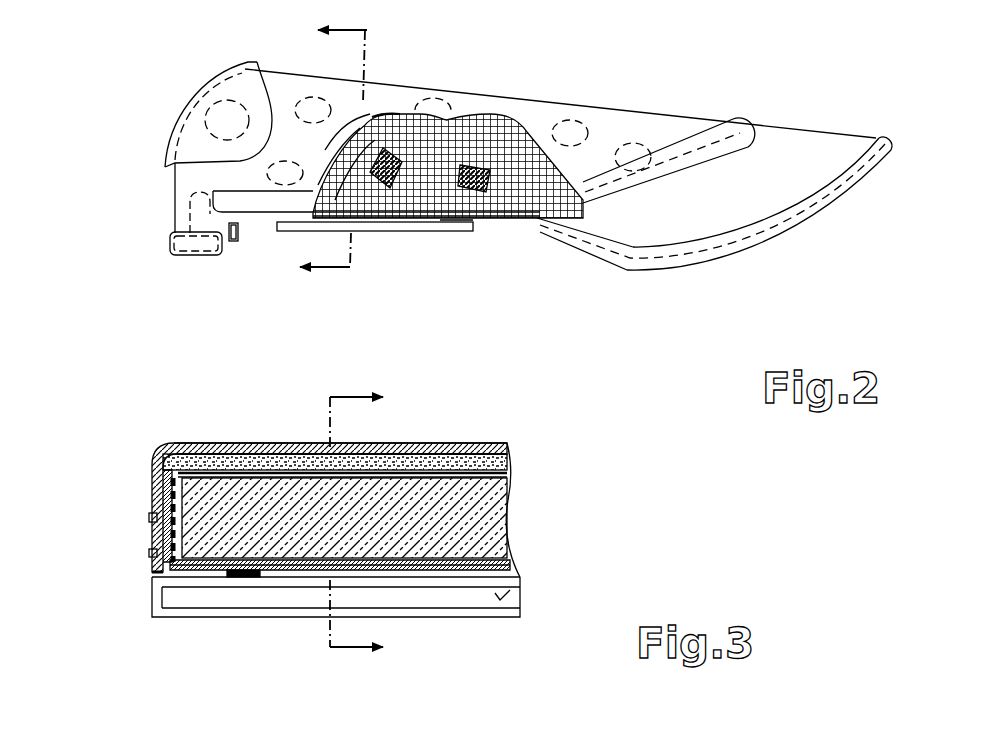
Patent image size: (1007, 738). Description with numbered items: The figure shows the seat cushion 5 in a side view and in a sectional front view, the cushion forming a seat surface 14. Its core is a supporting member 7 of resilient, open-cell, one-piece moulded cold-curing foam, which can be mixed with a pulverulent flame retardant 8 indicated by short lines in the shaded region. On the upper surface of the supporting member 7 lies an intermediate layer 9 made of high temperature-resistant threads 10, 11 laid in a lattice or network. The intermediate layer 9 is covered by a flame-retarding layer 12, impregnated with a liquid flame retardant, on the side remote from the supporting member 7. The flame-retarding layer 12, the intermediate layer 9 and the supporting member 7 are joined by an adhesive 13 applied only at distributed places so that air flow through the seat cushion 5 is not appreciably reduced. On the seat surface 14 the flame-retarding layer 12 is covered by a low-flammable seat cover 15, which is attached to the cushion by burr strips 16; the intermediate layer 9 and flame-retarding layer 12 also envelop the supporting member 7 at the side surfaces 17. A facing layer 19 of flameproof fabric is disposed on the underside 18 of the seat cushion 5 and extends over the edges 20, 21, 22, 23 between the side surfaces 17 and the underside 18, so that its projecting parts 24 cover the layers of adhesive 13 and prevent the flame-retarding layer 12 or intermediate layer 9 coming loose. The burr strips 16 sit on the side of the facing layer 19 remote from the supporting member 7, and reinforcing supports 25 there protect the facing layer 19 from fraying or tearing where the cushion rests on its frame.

In FIG. 2, the seat cushion 5 is at (730, 63).
In FIG. 3, the seat cushion 5 is at (608, 428).
In FIG. 2, the supporting member 7 is at (542, 210).
In FIG. 3, the supporting member 7 is at (236, 505).
In FIG. 3, the pulverulent flame retardant 8 is at (295, 582).
In FIG. 2, the intermediate layer 9 is at (510, 232).
In FIG. 3, the intermediate layer 9 is at (165, 578).
In FIG. 2, the high temperature-resistant thread 10 is at (408, 140).
In FIG. 3, the high temperature-resistant thread 10 is at (177, 470).
In FIG. 2, the high temperature-resistant thread 11 is at (400, 208).
In FIG. 3, the high temperature-resistant thread 11 is at (200, 475).
In FIG. 2, the flame-retarding layer 12 is at (500, 115).
In FIG. 3, the flame-retarding layer 12 is at (150, 512).
In FIG. 2, the adhesive 13 is at (197, 122).
In FIG. 3, the adhesive 13 is at (515, 555).
In FIG. 2, the seat surface 14 is at (557, 100).
In FIG. 3, the seat surface 14 is at (482, 443).
In FIG. 2, the seat cover 15 is at (195, 95).
In FIG. 3, the seat cover 15 is at (440, 443).
In FIG. 2, the burr strips 16 is at (238, 238).
In FIG. 3, the burr strips 16 is at (500, 598).
In FIG. 2, the side surfaces 17 is at (150, 172).
In FIG. 3, the side surfaces 17 is at (142, 466).
In FIG. 2, the underside 18 is at (442, 258).
In FIG. 3, the underside 18 is at (440, 598).
In FIG. 2, the facing layer 19 is at (572, 222).
In FIG. 3, the facing layer 19 is at (520, 566).
In FIG. 3, the edge 20 is at (143, 582).
In FIG. 2, the edge 21 is at (165, 262).
In FIG. 2, the edge 22 is at (898, 128).
In FIG. 2, the edge 23 is at (840, 243).
In FIG. 2, the projecting parts of the facing layer 24 is at (712, 142).
In FIG. 3, the projecting parts of the facing layer 24 is at (150, 553).
In FIG. 2, the reinforcing supports 25 is at (455, 229).
In FIG. 3, the reinforcing supports 25 is at (243, 577).